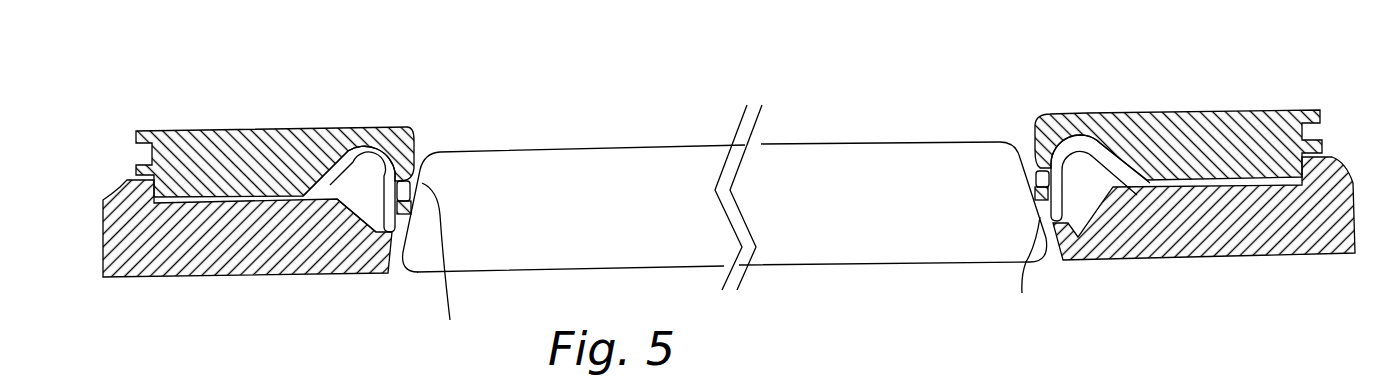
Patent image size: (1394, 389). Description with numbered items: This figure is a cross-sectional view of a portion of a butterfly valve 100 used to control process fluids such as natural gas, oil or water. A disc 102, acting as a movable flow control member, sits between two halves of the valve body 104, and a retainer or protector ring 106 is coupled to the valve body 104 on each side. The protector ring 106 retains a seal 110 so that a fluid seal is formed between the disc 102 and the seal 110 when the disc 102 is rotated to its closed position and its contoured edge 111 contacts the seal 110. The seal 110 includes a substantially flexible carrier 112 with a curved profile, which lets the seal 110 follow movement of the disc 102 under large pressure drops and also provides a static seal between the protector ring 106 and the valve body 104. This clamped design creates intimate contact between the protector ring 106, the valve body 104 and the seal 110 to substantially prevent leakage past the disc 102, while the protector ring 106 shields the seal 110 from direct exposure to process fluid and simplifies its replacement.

The butterfly valve 100 is at (834, 135).
The disc 102 is at (869, 217).
The valve body 104 is at (190, 263).
The protector ring 106 is at (253, 128).
The seal 110 is at (380, 127).
The contoured edge 111 is at (731, 263).
The flexible carrier 112 is at (346, 200).